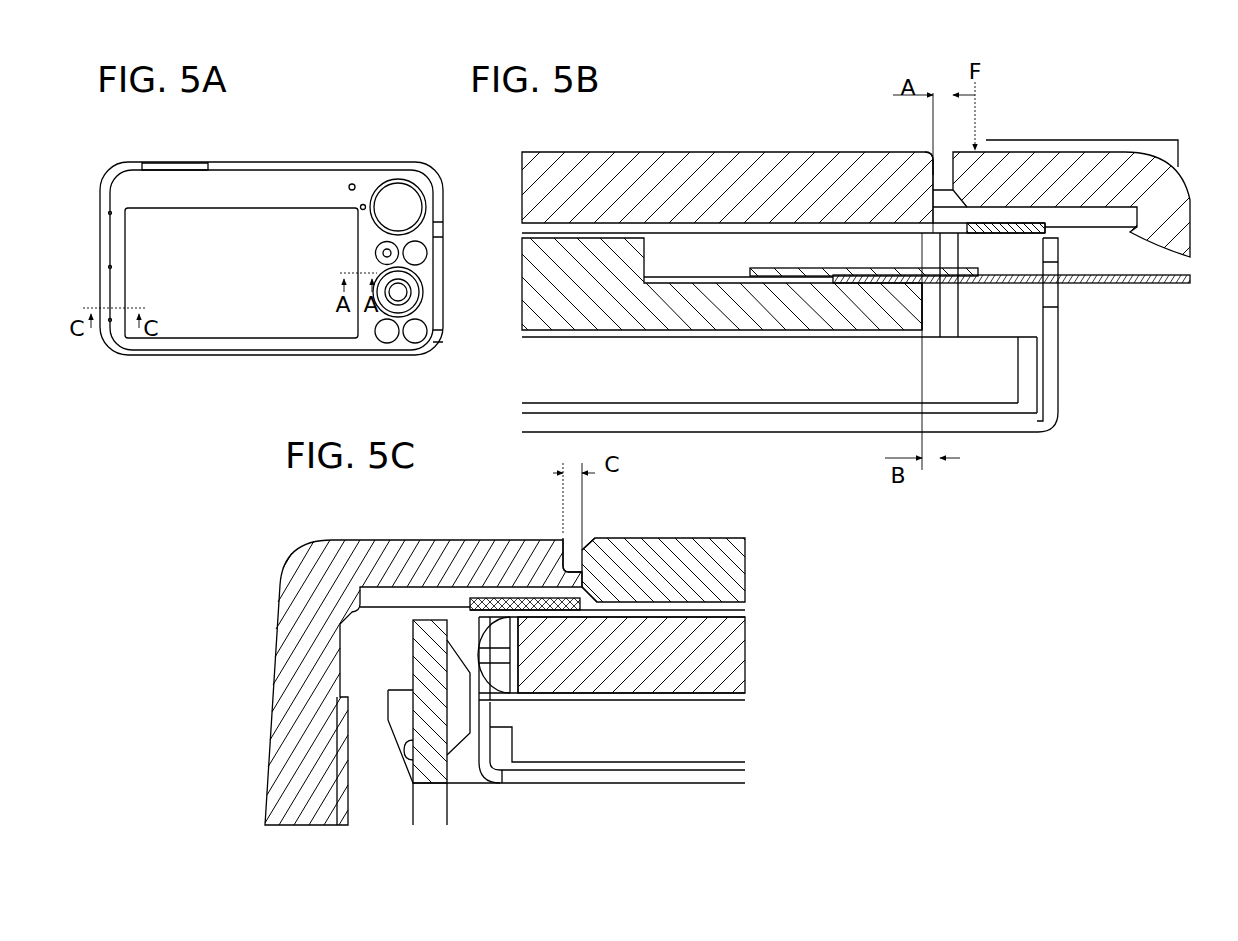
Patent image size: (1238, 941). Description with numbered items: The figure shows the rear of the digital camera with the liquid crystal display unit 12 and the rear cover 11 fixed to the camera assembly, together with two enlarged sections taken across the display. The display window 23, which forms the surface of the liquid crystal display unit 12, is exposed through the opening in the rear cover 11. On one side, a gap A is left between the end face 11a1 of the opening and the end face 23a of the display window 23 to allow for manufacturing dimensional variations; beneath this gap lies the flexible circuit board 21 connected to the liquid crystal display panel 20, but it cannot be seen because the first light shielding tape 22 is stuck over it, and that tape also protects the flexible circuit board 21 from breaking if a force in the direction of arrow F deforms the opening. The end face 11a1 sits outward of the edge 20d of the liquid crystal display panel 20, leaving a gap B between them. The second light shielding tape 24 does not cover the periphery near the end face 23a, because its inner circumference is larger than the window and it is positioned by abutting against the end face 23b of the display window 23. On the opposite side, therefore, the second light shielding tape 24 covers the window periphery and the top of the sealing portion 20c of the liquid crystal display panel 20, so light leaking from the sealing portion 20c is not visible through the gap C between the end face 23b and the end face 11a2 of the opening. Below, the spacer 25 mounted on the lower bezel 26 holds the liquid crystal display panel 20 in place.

In FIG. 5A, the rear cover 11 is at (268, 188).
In FIG. 5B, the rear cover 11 is at (1095, 178).
In FIG. 5C, the rear cover 11 is at (378, 550).
In FIG. 5A, the liquid crystal display unit 12 is at (205, 320).
In FIG. 5B, the liquid crystal display panel 20 is at (580, 243).
In FIG. 5C, the liquid crystal display panel 20 is at (718, 646).
In FIG. 5C, the sealing portion 20c is at (490, 632).
In FIG. 5B, the edge of the liquid crystal display panel 20d is at (922, 312).
In FIG. 5B, the flexible circuit board 21 is at (1160, 288).
In FIG. 5B, the first light shielding tape 22 is at (822, 268).
In FIG. 5B, the display window 23 is at (726, 180).
In FIG. 5C, the display window 23 is at (688, 548).
In FIG. 5B, the end face of the display window 23a is at (930, 156).
In FIG. 5C, the end face of the display window 23b is at (580, 547).
In FIG. 5B, the second light shielding tape 24 is at (1012, 228).
In FIG. 5C, the second light shielding tape 24 is at (510, 598).
In FIG. 5B, the spacer 25 is at (1018, 252).
In FIG. 5C, the spacer 25 is at (722, 732).
In FIG. 5B, the lower bezel 26 is at (1052, 345).
In FIG. 5C, the lower bezel 26 is at (668, 788).
In FIG. 5B, the end face of the opening 11a1 is at (960, 165).
In FIG. 5C, the end face of the opening 11a2 is at (565, 532).